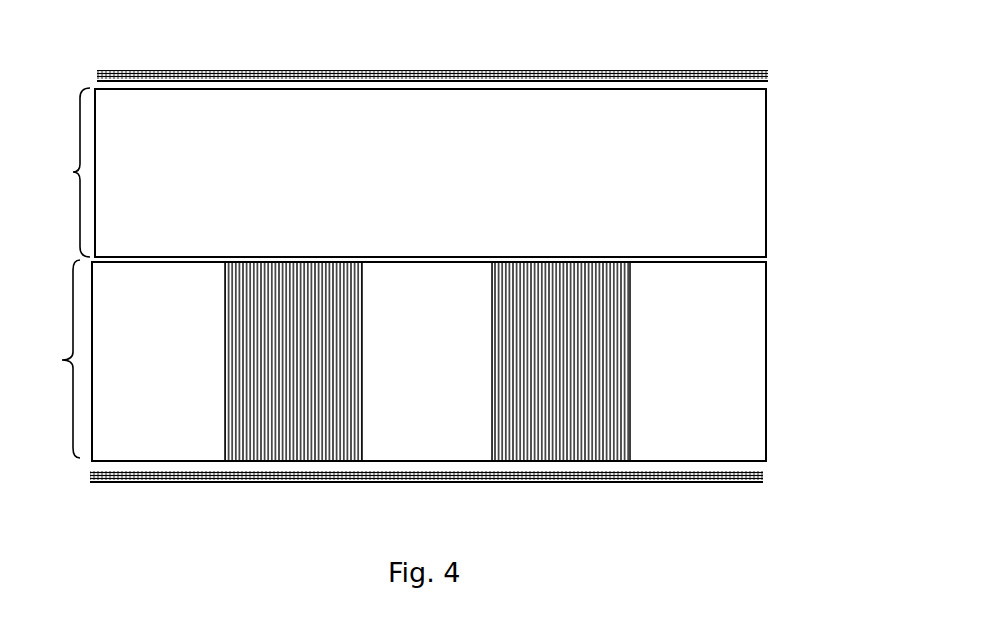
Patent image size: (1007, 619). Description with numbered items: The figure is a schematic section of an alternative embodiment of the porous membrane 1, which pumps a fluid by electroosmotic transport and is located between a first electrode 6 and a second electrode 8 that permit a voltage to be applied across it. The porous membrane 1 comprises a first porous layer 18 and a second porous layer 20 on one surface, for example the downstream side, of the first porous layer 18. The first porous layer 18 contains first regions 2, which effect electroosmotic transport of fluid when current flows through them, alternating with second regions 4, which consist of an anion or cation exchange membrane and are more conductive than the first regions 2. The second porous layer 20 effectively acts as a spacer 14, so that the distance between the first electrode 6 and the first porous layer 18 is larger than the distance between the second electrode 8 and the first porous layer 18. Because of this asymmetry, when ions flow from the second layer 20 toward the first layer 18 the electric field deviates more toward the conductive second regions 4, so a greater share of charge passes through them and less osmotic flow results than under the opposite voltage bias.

The porous membrane 1 is at (826, 197).
The first regions 2 is at (570, 422).
The second regions 4 is at (735, 368).
The first electrode 6 is at (673, 70).
The second electrode 8 is at (687, 483).
The spacer 14 is at (738, 155).
The first porous layer 18 is at (48, 359).
The second porous layer 20 is at (62, 172).